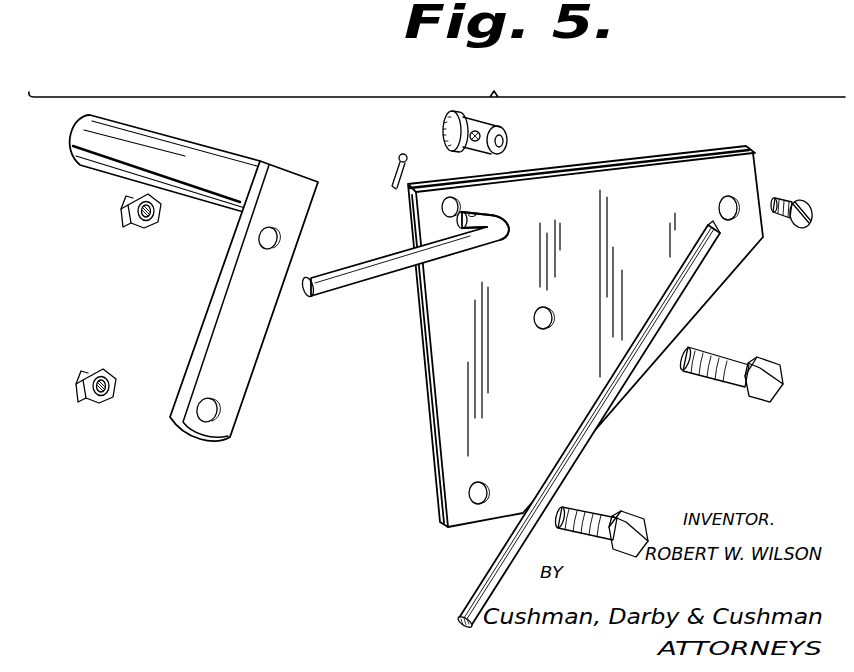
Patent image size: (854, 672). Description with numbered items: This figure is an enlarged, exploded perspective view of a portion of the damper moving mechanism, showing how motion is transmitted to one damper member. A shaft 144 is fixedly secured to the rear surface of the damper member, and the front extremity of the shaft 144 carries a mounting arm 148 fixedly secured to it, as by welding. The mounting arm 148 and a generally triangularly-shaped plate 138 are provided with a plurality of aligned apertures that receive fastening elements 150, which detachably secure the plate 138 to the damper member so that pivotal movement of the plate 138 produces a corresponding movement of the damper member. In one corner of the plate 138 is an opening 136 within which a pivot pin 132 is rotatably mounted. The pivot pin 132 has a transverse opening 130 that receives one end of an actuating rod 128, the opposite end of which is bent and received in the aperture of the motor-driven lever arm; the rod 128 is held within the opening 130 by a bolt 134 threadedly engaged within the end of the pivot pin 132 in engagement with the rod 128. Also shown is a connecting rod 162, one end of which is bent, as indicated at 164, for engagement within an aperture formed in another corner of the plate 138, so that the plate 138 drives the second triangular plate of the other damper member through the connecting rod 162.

The actuating rod 128 is at (571, 444).
The transverse opening 130 is at (490, 130).
The pivot pin 132 is at (482, 151).
The bolt 134 is at (805, 200).
The opening 136 is at (727, 198).
The triangularly-shaped plate 138 is at (641, 139).
The shaft 144 is at (193, 153).
The mounting arm 148 is at (222, 302).
The fastening elements 150 is at (723, 383).
The connecting rod 162 is at (321, 293).
The bent end 164 is at (490, 209).